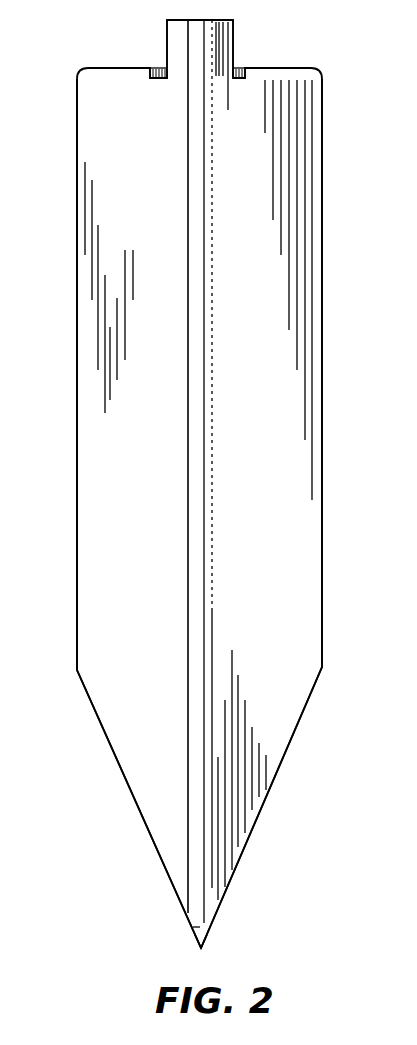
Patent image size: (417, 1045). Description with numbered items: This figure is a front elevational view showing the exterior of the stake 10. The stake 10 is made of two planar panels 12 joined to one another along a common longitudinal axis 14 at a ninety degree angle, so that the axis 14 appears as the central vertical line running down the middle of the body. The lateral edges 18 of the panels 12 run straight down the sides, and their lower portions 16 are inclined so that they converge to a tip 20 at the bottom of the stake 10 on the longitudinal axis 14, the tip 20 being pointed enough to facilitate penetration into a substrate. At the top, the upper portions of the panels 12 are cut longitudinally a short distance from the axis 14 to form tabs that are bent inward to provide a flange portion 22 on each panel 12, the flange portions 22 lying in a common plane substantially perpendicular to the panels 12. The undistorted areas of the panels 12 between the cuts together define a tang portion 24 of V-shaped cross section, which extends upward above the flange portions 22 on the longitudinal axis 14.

The stake 10 is at (277, 559).
The planar panel 12 is at (93, 437).
The longitudinal axis 14 is at (193, 160).
The lower portion of lateral edge 16 is at (142, 828).
The lateral edge 18 is at (77, 609).
The tip 20 is at (203, 947).
The flange portion 22 is at (136, 36).
The tang portion 24 is at (224, 38).